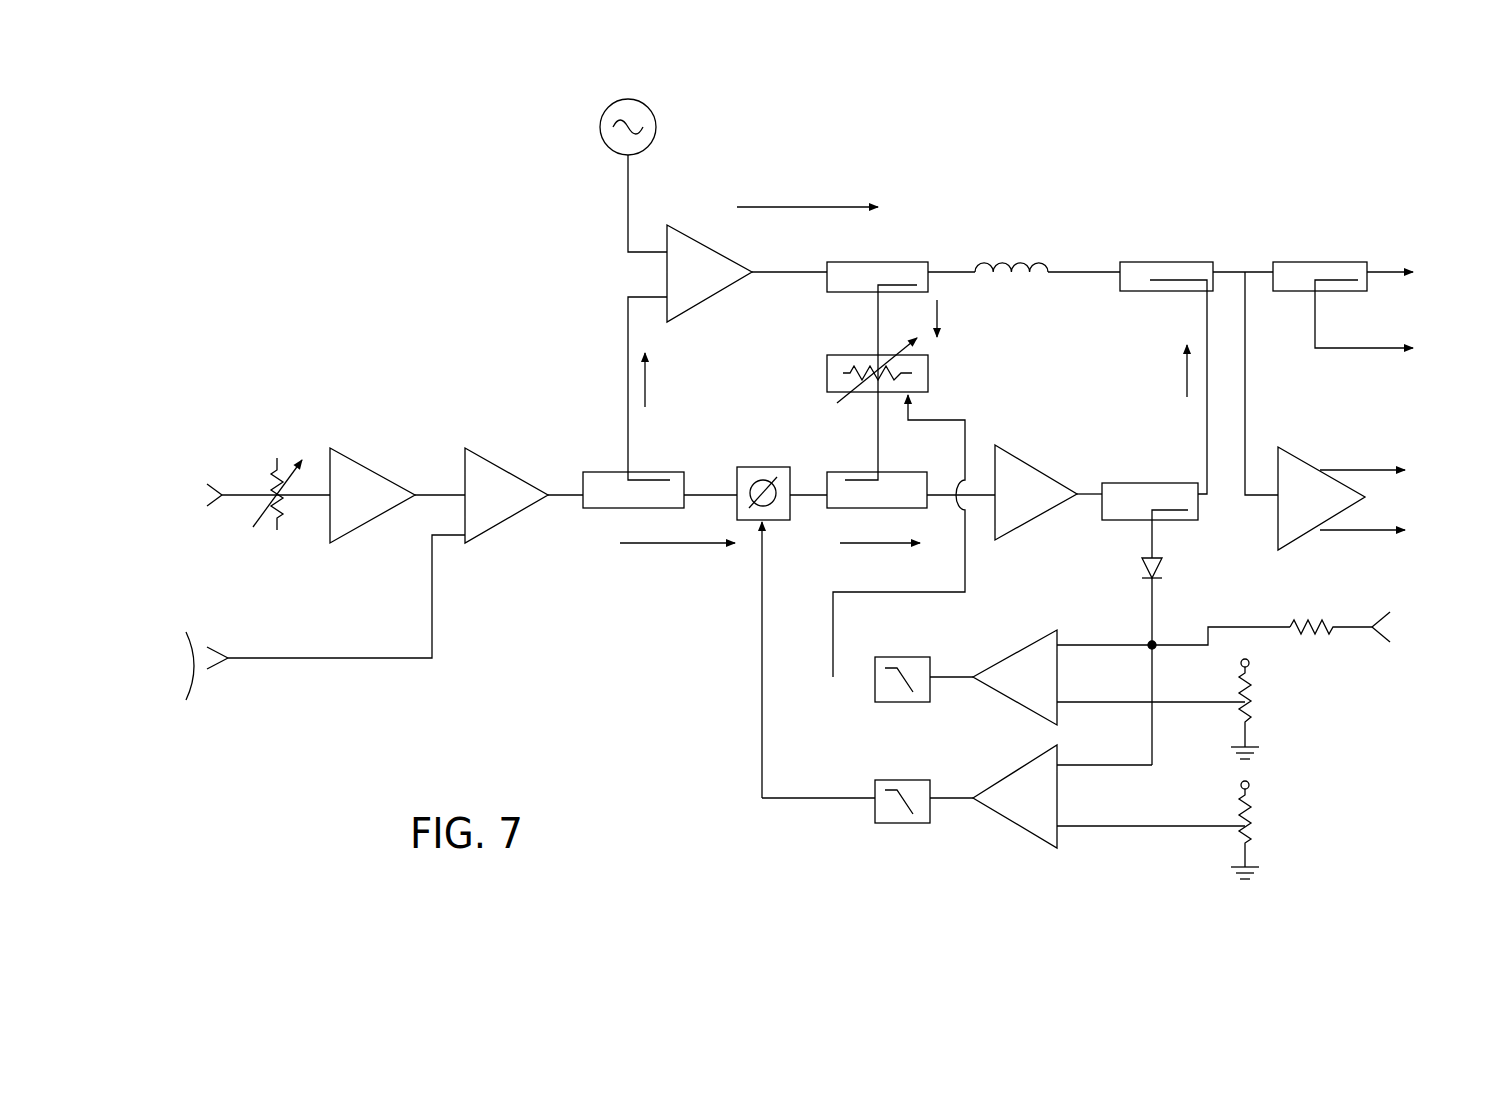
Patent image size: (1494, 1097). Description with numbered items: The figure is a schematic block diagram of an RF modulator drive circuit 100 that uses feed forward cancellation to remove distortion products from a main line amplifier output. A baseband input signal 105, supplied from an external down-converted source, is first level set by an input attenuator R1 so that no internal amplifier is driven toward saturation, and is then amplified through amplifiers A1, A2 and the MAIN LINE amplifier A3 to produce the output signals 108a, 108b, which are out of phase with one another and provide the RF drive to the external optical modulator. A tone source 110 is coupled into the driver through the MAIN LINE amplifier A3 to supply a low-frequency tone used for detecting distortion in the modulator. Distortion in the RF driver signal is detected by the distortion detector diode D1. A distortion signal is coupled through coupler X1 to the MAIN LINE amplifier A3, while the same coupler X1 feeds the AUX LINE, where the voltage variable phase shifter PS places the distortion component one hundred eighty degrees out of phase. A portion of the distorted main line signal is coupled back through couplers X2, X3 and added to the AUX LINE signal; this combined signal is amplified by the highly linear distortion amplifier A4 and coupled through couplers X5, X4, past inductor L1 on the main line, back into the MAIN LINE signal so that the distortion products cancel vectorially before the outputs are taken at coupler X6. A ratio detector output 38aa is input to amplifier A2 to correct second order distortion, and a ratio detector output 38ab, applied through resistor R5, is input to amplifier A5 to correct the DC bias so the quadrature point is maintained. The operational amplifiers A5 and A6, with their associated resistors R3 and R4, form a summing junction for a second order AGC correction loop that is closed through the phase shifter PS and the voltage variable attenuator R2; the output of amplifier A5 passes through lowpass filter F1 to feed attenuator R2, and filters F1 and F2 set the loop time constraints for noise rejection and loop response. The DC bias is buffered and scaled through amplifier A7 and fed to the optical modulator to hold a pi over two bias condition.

The RF modulator drive circuit 100 is at (960, 138).
The baseband input signal 105 is at (237, 494).
The tone source 110 is at (600, 121).
The output signal 108a is at (1422, 272).
The output signal 108b is at (1396, 320).
The output from the ratio detector 38aa is at (247, 658).
The output from the ratio detector 38ab is at (1417, 658).
The input attenuator R1 is at (277, 478).
The voltage variable attenuator R2 is at (899, 370).
The resistor R3 is at (1260, 709).
The resistor R4 is at (1260, 830).
The resistor R5 is at (1331, 614).
The amplifier A1 is at (372, 495).
The amplifier A2 is at (506, 495).
The MAIN LINE amplifier A3 is at (709, 273).
The distortion amplifier A4 is at (1036, 492).
The operational amplifier A5 is at (1015, 677).
The operational amplifier A6 is at (1015, 796).
The amplifier A7 is at (1341, 498).
The coupler X1 is at (633, 417).
The coupler X2 is at (877, 260).
The coupler X3 is at (877, 411).
The coupler X4 is at (1166, 260).
The coupler X5 is at (1154, 419).
The coupler X6 is at (1320, 260).
The inductor L1 is at (1011, 248).
The distortion detector diode D1 is at (1170, 661).
The lowpass filter F1 is at (902, 695).
The filter F2 is at (902, 818).
The voltage variable phase shifter PS is at (763, 617).